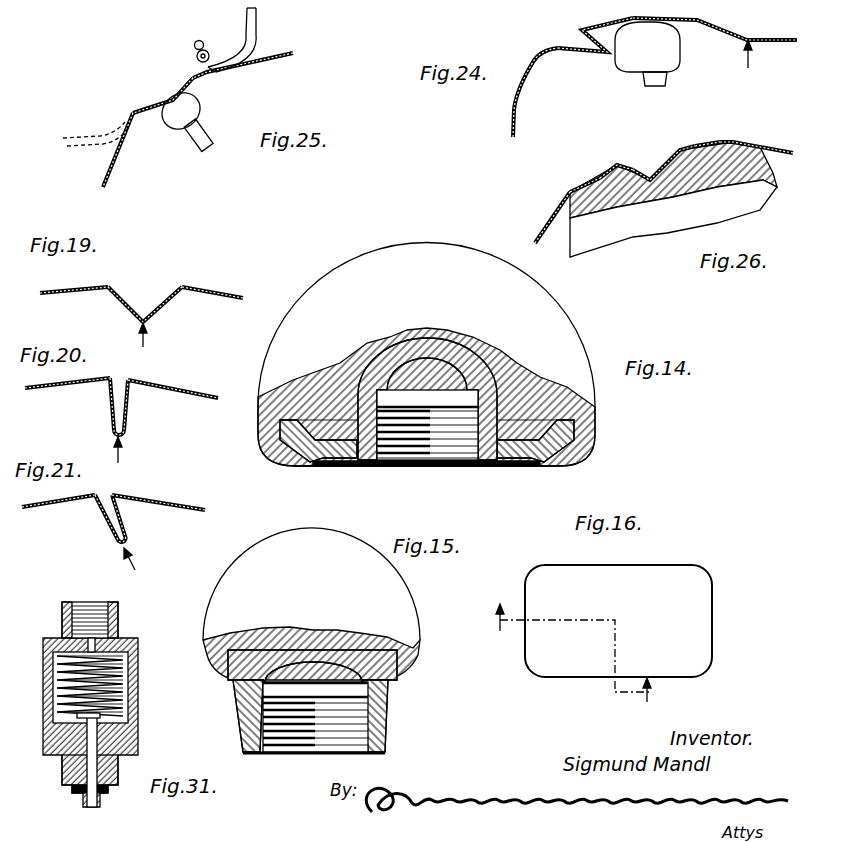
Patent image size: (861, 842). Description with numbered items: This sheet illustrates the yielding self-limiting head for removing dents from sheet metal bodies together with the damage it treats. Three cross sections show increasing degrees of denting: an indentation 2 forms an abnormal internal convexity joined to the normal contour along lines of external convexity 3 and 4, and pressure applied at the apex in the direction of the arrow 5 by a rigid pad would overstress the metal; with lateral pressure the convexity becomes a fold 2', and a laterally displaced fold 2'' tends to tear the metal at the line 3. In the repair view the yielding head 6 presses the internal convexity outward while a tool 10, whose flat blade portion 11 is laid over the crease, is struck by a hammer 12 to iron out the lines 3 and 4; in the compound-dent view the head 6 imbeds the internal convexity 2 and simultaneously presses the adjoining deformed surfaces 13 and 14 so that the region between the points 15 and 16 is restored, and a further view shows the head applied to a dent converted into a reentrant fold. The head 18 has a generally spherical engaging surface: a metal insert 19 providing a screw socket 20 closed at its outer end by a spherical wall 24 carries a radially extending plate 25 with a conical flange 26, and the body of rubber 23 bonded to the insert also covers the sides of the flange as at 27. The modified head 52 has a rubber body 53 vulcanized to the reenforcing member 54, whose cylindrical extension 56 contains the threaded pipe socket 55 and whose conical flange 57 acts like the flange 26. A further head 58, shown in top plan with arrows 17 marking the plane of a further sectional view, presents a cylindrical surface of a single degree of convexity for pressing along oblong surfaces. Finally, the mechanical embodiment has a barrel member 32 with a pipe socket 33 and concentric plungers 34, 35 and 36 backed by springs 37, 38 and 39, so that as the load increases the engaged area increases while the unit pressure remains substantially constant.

In FIG. 25, the indentation 2 is at (163, 90).
In FIG. 24, the indentation 2 is at (588, 35).
In FIG. 26, the indentation 2 is at (649, 160).
In FIG. 19, the indentation 2 is at (145, 299).
In FIG. 20, the fold 2' is at (136, 406).
In FIG. 21, the laterally displaced fold 2'' is at (100, 522).
In FIG. 25, the line of external convexity 3 is at (213, 73).
In FIG. 26, the line of external convexity 3 is at (682, 145).
In FIG. 19, the line of external convexity 3 is at (182, 287).
In FIG. 20, the line of external convexity 3 is at (132, 382).
In FIG. 21, the line of external convexity 3 is at (115, 496).
In FIG. 25, the line of external convexity 4 is at (137, 117).
In FIG. 26, the line of external convexity 4 is at (622, 167).
In FIG. 19, the line of external convexity 4 is at (110, 287).
In FIG. 20, the line of external convexity 4 is at (108, 378).
In FIG. 21, the line of external convexity 4 is at (97, 494).
In FIG. 19, the arrow 5 is at (148, 337).
In FIG. 20, the arrow 5 is at (124, 450).
In FIG. 21, the arrow 5 is at (140, 560).
In FIG. 25, the yielding self-limiting head 6 is at (192, 107).
In FIG. 26, the yielding self-limiting head 6 is at (633, 227).
In FIG. 25, the tool 10 is at (258, 22).
In FIG. 25, the flat blade portion 11 is at (218, 62).
In FIG. 25, the hammer 12 is at (193, 50).
In FIG. 26, the deformed surface 13 is at (708, 142).
In FIG. 26, the deformed surface 14 is at (598, 178).
In FIG. 26, the point 15 is at (740, 142).
In FIG. 26, the point 16 is at (575, 190).
In FIG. 24, the section line 17 is at (754, 61).
In FIG. 16, the section line 17 is at (656, 692).
In FIG. 14, the head 18 is at (577, 327).
In FIG. 14, the metal insert 19 is at (513, 467).
In FIG. 14, the screw socket 20 is at (381, 447).
In FIG. 14, the body of rubber 23 is at (337, 280).
In FIG. 14, the spherical wall 24 is at (421, 328).
In FIG. 14, the radially extending flange 25 is at (330, 463).
In FIG. 14, the conical flange 26 is at (290, 431).
In FIG. 14, the side covering of elastic body 27 is at (577, 440).
In FIG. 31, the barrel member 32 is at (140, 690).
In FIG. 31, the pipe socket 33 is at (120, 616).
In FIG. 31, the plunger 34 is at (88, 800).
In FIG. 31, the plunger 35 is at (70, 790).
In FIG. 31, the plunger 36 is at (62, 770).
In FIG. 31, the spring 37 is at (66, 642).
In FIG. 31, the spring 38 is at (56, 661).
In FIG. 31, the spring 39 is at (56, 689).
In FIG. 15, the casing 52 is at (412, 582).
In FIG. 15, the filler 53 is at (230, 600).
In FIG. 15, the reenforcing member 54 is at (380, 683).
In FIG. 15, the pipe socket 55 is at (266, 730).
In FIG. 15, the cylindrical extension 56 is at (380, 722).
In FIG. 15, the conical flange 57 is at (413, 660).
In FIG. 16, the head 58 is at (703, 605).